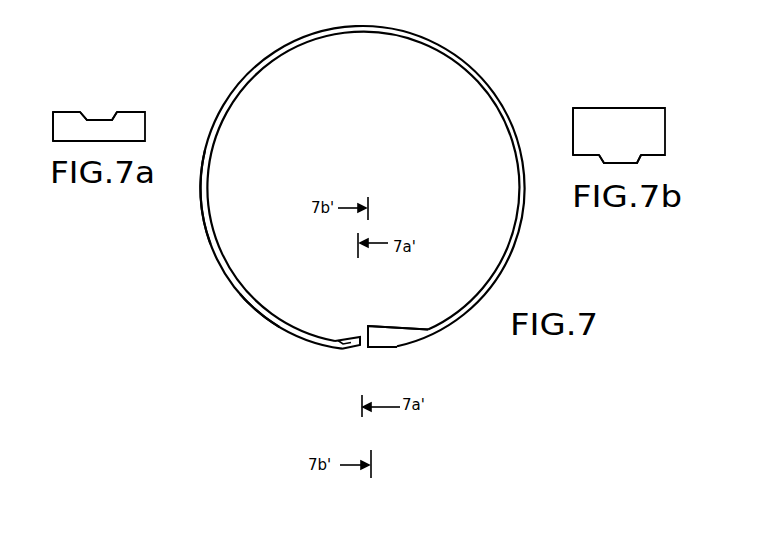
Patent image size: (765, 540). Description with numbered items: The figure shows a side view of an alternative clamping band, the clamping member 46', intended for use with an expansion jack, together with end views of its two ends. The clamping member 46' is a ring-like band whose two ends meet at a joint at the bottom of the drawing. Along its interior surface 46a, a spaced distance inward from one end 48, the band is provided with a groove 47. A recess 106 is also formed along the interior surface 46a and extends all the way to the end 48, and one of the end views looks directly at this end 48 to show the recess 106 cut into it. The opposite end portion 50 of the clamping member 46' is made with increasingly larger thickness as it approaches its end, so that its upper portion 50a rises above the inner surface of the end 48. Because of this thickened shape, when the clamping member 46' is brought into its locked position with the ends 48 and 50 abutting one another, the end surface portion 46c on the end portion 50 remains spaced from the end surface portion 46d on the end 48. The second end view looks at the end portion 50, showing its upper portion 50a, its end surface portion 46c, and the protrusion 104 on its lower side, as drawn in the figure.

In FIG. 7, the clamping member 46' is at (363, 187).
In FIG. 7, the groove 47 is at (218, 244).
In FIG. 7, the interior surface 46a is at (260, 293).
In FIG. 7A, the interior surface 46a is at (57, 113).
In FIG. 7, the end surface portion 46d is at (336, 334).
In FIG. 7, the end 48 is at (360, 345).
In FIG. 7A, the end 48 is at (130, 131).
In FIG. 7, the recess 106 is at (348, 346).
In FIG. 7A, the recess 106 is at (95, 120).
In FIG. 7, the end portion 50 is at (371, 348).
In FIG. 7B, the end portion 50 is at (580, 145).
In FIG. 7, the upper portion 50a is at (368, 328).
In FIG. 7B, the upper portion 50a is at (578, 114).
In FIG. 7, the end surface portion 46c is at (417, 326).
In FIG. 7B, the end surface portion 46c is at (616, 108).
In FIG. 7, the protrusion 104 is at (397, 347).
In FIG. 7B, the protrusion 104 is at (622, 163).